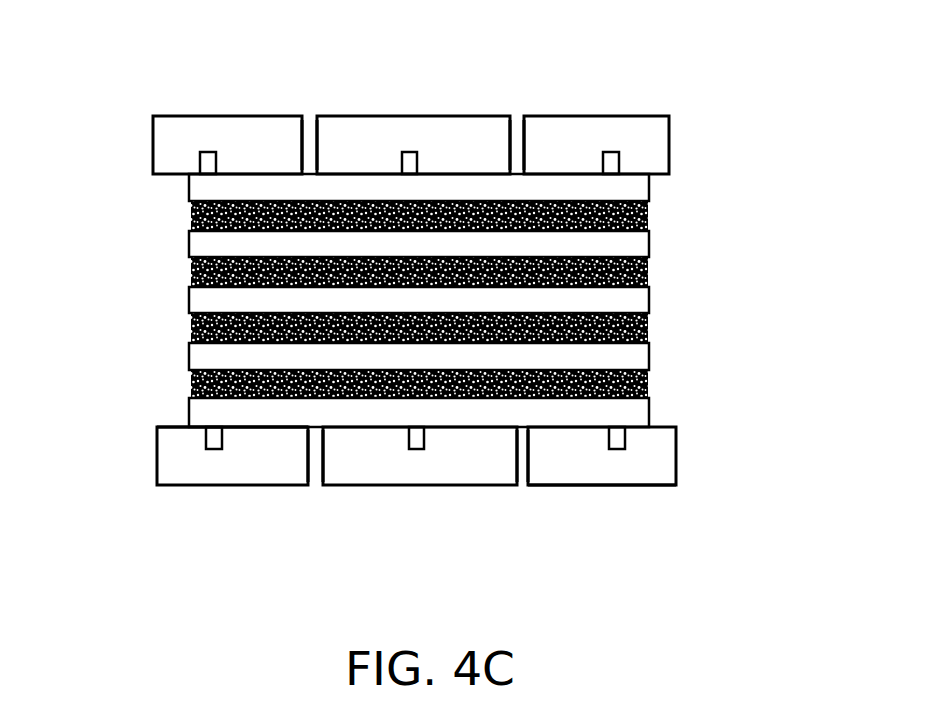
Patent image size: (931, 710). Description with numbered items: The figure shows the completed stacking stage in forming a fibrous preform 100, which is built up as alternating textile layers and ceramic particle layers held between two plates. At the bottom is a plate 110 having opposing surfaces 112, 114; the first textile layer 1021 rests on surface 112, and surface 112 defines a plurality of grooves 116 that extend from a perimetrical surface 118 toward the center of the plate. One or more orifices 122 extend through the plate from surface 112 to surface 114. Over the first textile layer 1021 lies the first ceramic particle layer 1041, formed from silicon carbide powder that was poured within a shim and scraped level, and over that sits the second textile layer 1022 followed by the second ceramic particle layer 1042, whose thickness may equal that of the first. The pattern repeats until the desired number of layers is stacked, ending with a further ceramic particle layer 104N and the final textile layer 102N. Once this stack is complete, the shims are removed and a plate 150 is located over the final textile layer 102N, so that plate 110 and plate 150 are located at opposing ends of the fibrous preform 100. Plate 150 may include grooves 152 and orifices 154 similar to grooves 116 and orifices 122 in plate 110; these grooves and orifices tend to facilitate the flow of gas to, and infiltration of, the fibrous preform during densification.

The fibrous preform 100 is at (142, 171).
The final textile layer 102N is at (637, 187).
The second textile layer 1022 is at (639, 363).
The first textile layer 1021 is at (635, 420).
The ceramic particle layer 104N is at (173, 218).
The second ceramic particle layer 1042 is at (174, 327).
The first ceramic particle layer 1041 is at (174, 387).
The plate 110 is at (183, 466).
The surface 112 is at (171, 427).
The surface 114 is at (634, 486).
The grooves 116 is at (419, 462).
The perimetrical surface 118 is at (678, 460).
The orifices 122 is at (316, 490).
The plate 150 is at (657, 145).
The grooves 152 is at (208, 136).
The orifices 154 is at (310, 102).